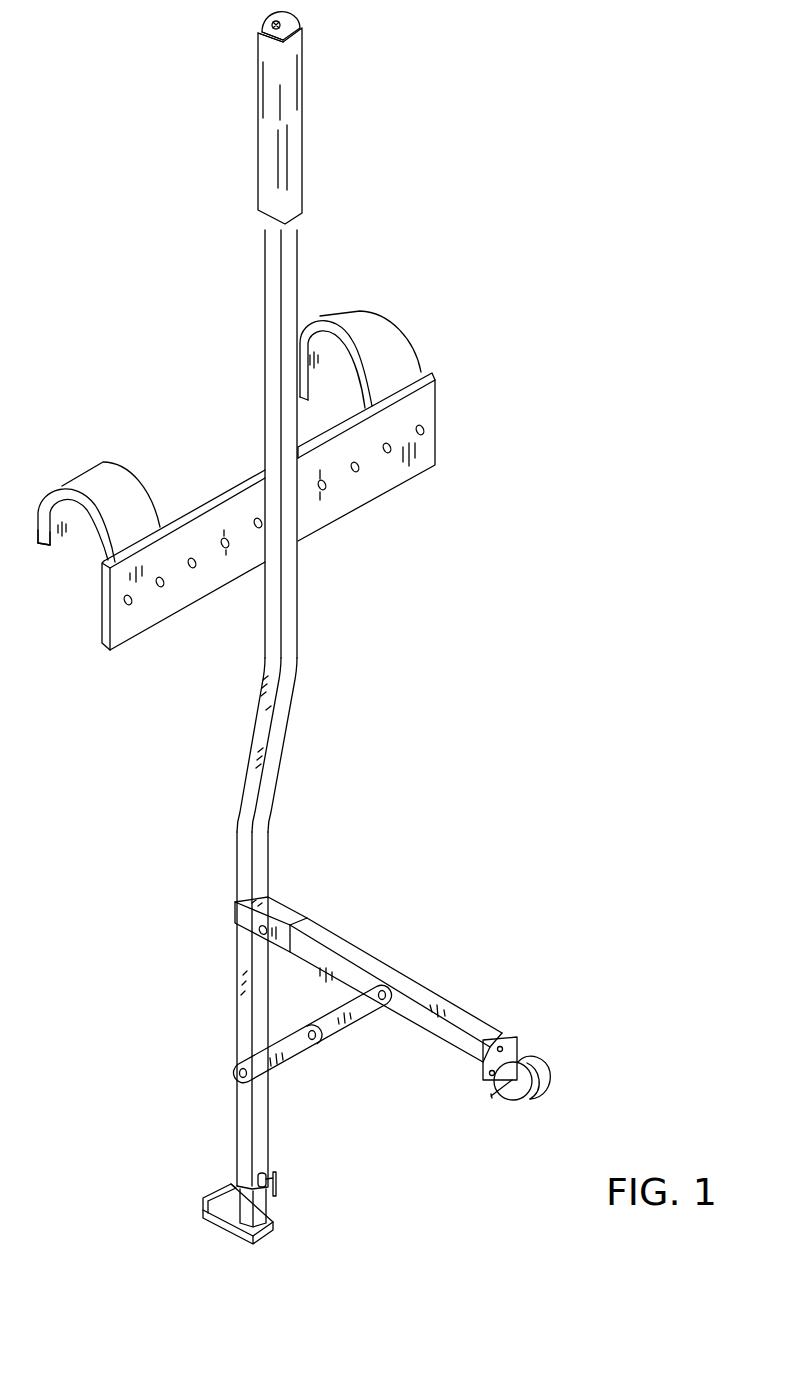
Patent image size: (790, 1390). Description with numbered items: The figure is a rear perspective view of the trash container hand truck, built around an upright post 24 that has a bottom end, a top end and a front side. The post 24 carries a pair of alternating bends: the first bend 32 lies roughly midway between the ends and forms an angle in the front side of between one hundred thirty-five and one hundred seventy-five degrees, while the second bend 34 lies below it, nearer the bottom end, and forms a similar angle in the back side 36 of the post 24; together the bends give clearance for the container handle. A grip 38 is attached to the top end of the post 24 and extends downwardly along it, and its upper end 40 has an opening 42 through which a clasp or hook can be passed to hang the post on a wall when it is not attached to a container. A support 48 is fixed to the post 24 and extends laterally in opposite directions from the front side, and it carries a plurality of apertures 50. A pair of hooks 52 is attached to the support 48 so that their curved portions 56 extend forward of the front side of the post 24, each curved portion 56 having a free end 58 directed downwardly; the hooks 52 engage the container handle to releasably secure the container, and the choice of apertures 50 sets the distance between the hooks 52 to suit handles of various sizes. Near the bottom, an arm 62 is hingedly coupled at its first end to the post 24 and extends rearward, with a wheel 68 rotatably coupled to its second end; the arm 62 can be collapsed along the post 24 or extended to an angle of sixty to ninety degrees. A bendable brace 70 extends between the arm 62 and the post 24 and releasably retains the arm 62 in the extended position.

The post 24 is at (286, 737).
The first bend 32 is at (302, 652).
The second bend 34 is at (263, 828).
The back side 36 is at (273, 742).
The grip 38 is at (303, 120).
The upper end 40 is at (299, 16).
The opening 42 is at (263, 25).
The support 48 is at (118, 650).
The apertures 50 is at (425, 428).
The hooks 52 is at (410, 367).
The curved portion 56 is at (357, 327).
The free end 58 is at (48, 548).
The arm 62 is at (452, 1003).
The wheel 68 is at (535, 1063).
The brace 70 is at (292, 1053).